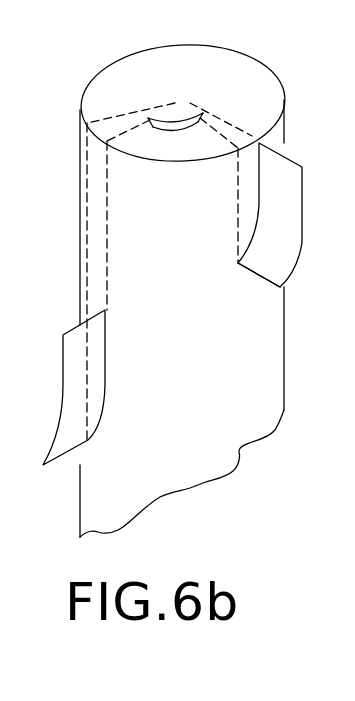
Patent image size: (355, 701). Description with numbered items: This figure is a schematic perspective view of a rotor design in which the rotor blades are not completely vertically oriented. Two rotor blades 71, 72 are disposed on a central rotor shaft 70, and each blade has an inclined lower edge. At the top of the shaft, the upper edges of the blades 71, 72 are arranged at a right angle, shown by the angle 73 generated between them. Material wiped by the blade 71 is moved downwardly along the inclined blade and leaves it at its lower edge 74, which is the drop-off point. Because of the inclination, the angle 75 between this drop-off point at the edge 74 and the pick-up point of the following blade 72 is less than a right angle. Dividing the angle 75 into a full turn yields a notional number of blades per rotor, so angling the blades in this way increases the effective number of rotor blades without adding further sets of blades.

The central rotor shaft 70 is at (245, 58).
The rotor blade 71 is at (295, 200).
The rotor blade 72 is at (65, 367).
The angle 73 is at (180, 105).
The lower edge 74 is at (255, 282).
The angle 75 is at (178, 132).